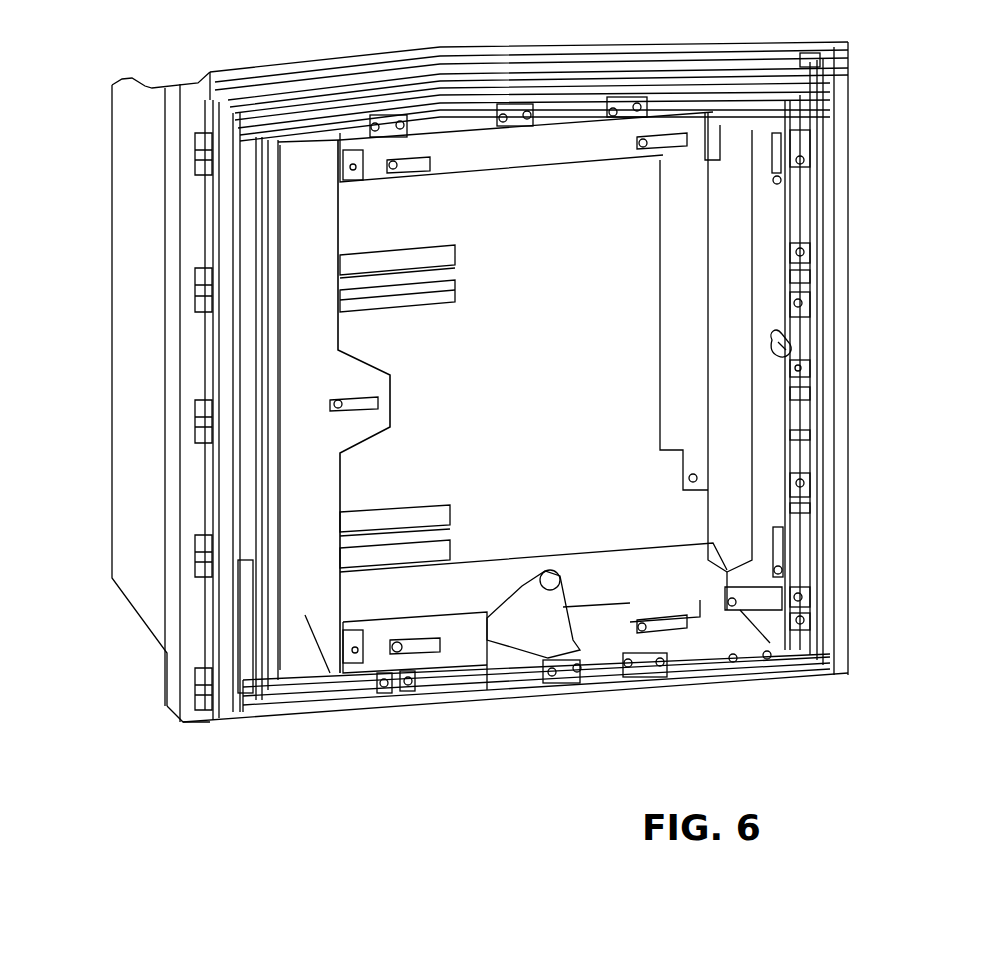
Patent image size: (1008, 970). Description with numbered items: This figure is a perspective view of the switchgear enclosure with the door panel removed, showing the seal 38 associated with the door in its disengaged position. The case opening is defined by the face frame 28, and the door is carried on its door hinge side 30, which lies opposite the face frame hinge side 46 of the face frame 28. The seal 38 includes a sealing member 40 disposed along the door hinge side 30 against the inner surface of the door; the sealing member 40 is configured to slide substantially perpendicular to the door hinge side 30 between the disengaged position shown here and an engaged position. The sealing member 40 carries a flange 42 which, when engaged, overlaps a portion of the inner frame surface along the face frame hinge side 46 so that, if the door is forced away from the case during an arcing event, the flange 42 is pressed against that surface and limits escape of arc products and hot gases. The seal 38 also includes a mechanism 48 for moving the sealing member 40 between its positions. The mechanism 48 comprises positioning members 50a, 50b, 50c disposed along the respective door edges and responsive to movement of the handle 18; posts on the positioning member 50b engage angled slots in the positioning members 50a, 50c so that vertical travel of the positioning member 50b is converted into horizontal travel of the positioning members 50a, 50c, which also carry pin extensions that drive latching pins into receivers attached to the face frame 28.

The handle 18 is at (778, 348).
The face frame 28 is at (240, 648).
The door hinge side 30 is at (223, 260).
The seal 38 is at (420, 450).
The sealing member 40 is at (305, 615).
The flange 42 is at (267, 540).
The face frame hinge side 46 is at (203, 505).
The mechanism 48 is at (747, 462).
The positioning member 50a is at (517, 160).
The positioning member 50b is at (772, 220).
The positioning member 50c is at (465, 633).